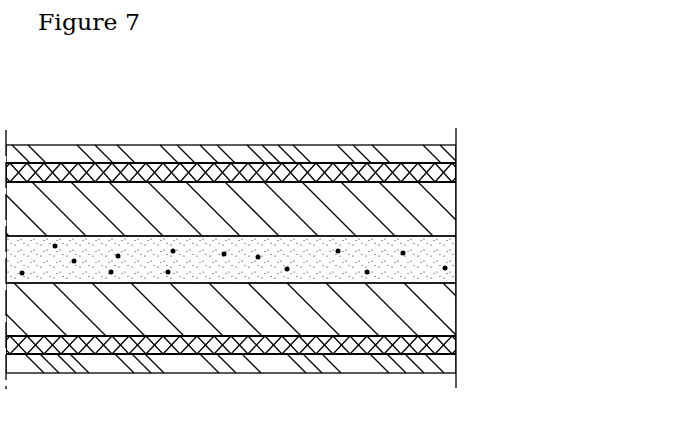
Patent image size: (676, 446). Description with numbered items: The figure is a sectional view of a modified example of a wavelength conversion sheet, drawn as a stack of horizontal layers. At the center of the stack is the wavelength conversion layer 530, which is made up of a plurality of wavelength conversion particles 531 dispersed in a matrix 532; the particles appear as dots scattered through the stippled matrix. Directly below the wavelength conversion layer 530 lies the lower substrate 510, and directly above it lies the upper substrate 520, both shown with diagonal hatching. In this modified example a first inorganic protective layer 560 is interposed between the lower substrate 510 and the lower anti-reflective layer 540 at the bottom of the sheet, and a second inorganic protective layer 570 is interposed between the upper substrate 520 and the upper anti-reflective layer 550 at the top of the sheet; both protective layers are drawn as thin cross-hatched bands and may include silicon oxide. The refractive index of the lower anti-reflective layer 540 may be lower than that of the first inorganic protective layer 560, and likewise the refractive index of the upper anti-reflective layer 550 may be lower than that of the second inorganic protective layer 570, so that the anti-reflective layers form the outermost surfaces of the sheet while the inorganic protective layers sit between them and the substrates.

The lower substrate 510 is at (448, 308).
The upper substrate 520 is at (448, 208).
The wavelength conversion layer 530 is at (286, 259).
The wavelength conversion particles 531 is at (445, 268).
The matrix 532 is at (448, 250).
The lower anti-reflective layer 540 is at (448, 362).
The upper anti-reflective layer 550 is at (456, 149).
The first inorganic protective layer 560 is at (456, 341).
The second inorganic protective layer 570 is at (456, 177).